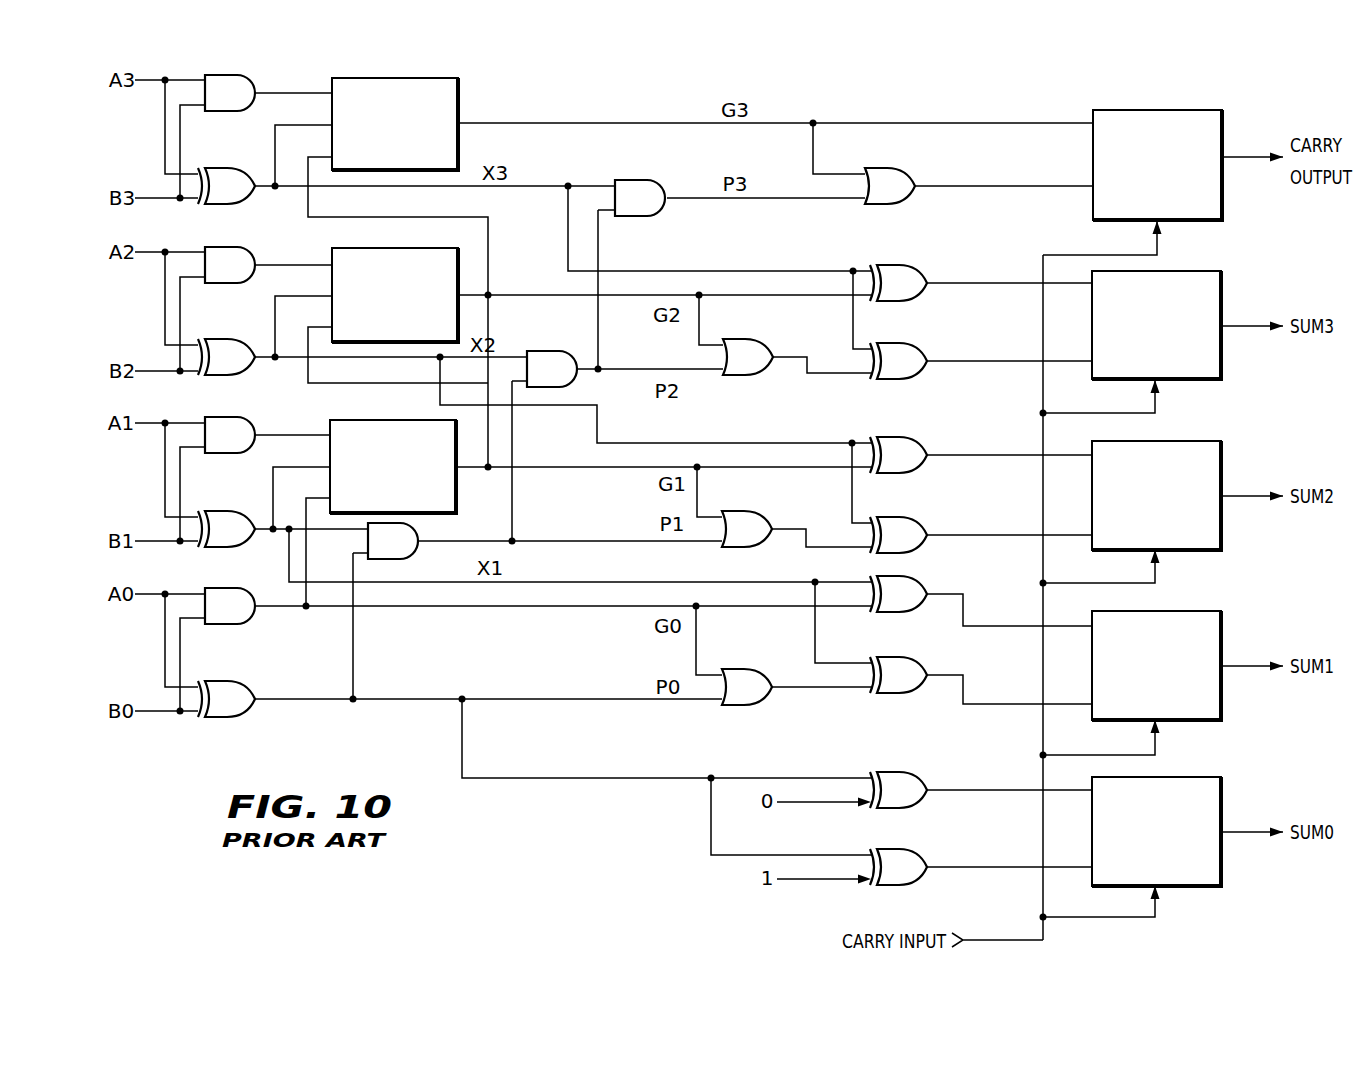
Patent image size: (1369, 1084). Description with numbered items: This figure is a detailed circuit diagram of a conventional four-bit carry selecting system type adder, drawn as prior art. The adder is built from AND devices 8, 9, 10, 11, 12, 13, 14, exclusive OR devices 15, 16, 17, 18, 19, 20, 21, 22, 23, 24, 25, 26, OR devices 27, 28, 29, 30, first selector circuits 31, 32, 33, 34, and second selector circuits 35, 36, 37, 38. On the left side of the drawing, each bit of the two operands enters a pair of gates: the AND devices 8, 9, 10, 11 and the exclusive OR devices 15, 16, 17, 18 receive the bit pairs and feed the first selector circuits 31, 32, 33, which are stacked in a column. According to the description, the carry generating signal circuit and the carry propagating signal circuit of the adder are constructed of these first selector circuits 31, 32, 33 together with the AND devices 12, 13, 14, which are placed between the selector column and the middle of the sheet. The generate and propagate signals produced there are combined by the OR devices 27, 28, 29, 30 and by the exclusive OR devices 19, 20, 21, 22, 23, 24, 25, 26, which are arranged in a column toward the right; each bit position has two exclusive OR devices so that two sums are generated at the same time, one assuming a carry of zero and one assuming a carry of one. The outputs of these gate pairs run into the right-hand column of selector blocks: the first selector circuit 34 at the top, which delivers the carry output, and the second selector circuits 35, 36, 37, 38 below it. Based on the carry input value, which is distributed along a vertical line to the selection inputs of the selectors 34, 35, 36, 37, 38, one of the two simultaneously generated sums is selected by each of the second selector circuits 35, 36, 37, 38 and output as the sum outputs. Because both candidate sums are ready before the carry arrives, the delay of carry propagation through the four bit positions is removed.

The AND device 8 is at (226, 111).
The AND device 9 is at (226, 283).
The AND device 10 is at (226, 453).
The AND device 11 is at (226, 624).
The AND device 12 is at (413, 552).
The AND device 13 is at (552, 350).
The AND device 14 is at (660, 210).
The exclusive OR device 15 is at (243, 200).
The exclusive OR device 16 is at (243, 371).
The exclusive OR device 17 is at (243, 542).
The exclusive OR device 18 is at (243, 712).
The exclusive OR device 19 is at (913, 270).
The exclusive OR device 20 is at (913, 350).
The exclusive OR device 21 is at (913, 443).
The exclusive OR device 22 is at (913, 524).
The exclusive OR device 23 is at (913, 584).
The exclusive OR device 24 is at (913, 664).
The exclusive OR device 25 is at (913, 781).
The exclusive OR device 26 is at (913, 858).
The OR device 27 is at (912, 175).
The OR device 28 is at (763, 343).
The OR device 29 is at (763, 517).
The OR device 30 is at (763, 673).
The first selector circuit 31 is at (458, 105).
The first selector circuit 32 is at (458, 263).
The first selector circuit 33 is at (456, 497).
The first selector circuit 34 is at (1222, 120).
The second selector circuit 35 is at (1221, 285).
The second selector circuit 36 is at (1221, 455).
The second selector circuit 37 is at (1221, 625).
The second selector circuit 38 is at (1221, 791).